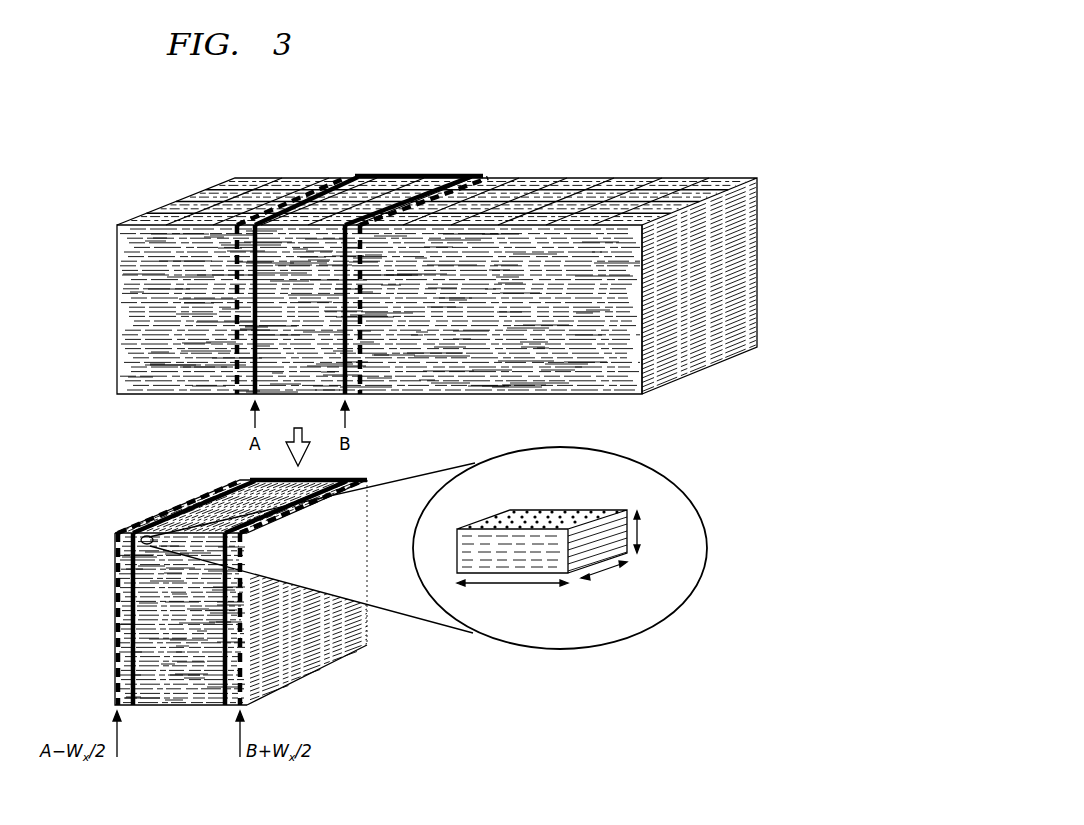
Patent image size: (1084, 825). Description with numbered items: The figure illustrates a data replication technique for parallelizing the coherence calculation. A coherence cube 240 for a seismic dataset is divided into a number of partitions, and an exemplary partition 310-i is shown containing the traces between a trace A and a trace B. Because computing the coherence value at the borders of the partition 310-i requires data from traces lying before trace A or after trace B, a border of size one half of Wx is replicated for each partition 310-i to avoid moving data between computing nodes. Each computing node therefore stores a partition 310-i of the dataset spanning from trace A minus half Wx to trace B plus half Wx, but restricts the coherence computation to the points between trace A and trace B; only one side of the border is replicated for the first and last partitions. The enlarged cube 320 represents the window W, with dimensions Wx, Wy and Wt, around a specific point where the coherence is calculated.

The coherence cube 240 is at (690, 178).
The partition 310-i is at (184, 728).
The cube 320 is at (680, 490).